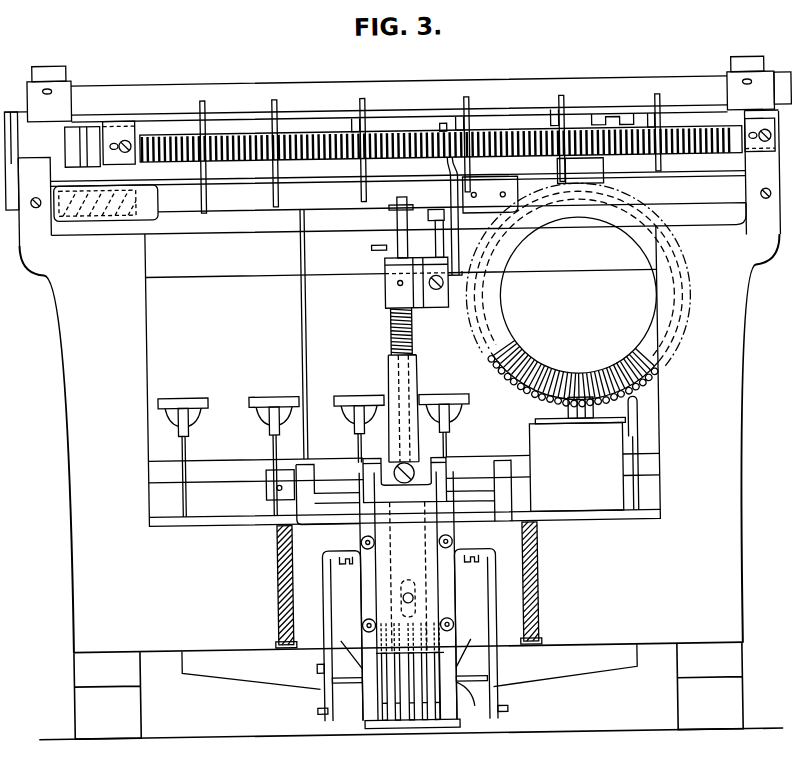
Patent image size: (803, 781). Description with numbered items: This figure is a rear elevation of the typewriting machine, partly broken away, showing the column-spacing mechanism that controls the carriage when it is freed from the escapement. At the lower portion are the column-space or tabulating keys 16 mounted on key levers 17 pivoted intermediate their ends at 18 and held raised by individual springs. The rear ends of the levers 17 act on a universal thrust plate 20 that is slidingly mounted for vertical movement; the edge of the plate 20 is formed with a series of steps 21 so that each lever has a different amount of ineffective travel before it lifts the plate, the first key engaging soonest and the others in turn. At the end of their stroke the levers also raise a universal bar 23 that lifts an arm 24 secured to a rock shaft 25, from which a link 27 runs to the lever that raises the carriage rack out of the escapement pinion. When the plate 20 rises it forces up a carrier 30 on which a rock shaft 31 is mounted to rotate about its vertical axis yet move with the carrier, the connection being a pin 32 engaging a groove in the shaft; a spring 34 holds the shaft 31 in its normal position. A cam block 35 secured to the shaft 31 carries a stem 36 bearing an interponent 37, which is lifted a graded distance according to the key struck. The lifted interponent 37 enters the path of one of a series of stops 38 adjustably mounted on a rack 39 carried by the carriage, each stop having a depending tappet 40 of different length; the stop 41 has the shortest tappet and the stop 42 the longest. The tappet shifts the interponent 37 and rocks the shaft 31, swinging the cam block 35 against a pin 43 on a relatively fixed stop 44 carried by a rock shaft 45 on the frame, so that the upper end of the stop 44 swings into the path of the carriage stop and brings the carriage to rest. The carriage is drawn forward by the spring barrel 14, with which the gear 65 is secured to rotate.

The spring barrel 14 is at (495, 320).
The column-space or tabulating keys 16 is at (355, 390).
The key levers 17 is at (282, 680).
The pivot 18 is at (313, 667).
The universal thrust plate 20 is at (427, 666).
The steps 21 is at (345, 717).
The universal bar 23 is at (413, 472).
The arm 24 is at (405, 495).
The rock shaft 25 is at (322, 483).
The link 27 is at (308, 337).
The carrier 30 is at (398, 372).
The rock shaft 31 is at (397, 246).
The pin 32 is at (412, 457).
The spring 34 is at (412, 330).
The cam block 35 is at (398, 290).
The stem 36 is at (434, 245).
The interponent 37 is at (432, 217).
The stops 38 is at (579, 139).
The rack 39 is at (441, 156).
The tappet 40 is at (206, 205).
The stop 41 is at (659, 96).
The stop 42 is at (206, 98).
The pin 43 is at (385, 262).
The fixed stop 44 is at (442, 123).
The rock shaft 45 is at (243, 209).
The gear 65 is at (491, 381).